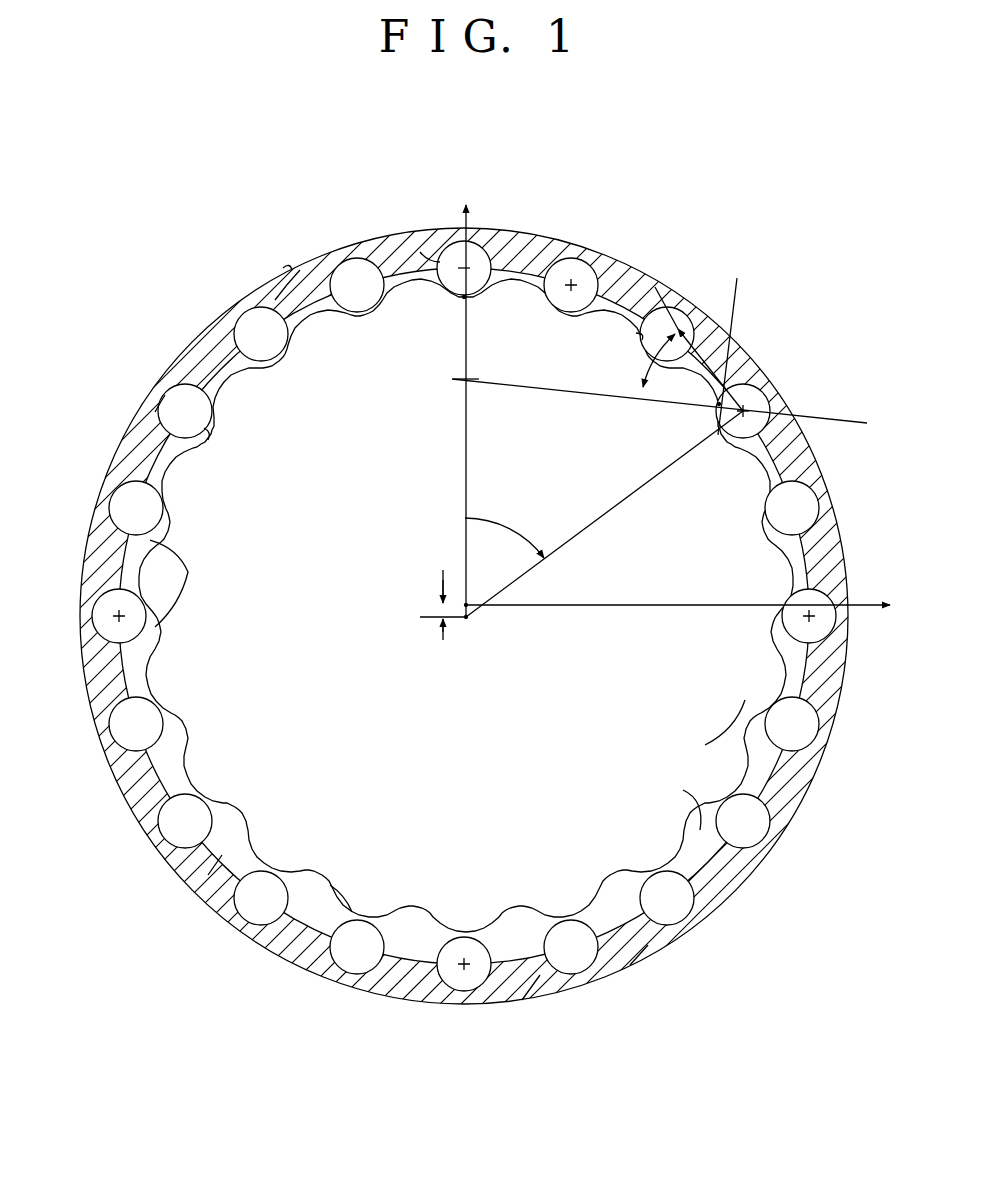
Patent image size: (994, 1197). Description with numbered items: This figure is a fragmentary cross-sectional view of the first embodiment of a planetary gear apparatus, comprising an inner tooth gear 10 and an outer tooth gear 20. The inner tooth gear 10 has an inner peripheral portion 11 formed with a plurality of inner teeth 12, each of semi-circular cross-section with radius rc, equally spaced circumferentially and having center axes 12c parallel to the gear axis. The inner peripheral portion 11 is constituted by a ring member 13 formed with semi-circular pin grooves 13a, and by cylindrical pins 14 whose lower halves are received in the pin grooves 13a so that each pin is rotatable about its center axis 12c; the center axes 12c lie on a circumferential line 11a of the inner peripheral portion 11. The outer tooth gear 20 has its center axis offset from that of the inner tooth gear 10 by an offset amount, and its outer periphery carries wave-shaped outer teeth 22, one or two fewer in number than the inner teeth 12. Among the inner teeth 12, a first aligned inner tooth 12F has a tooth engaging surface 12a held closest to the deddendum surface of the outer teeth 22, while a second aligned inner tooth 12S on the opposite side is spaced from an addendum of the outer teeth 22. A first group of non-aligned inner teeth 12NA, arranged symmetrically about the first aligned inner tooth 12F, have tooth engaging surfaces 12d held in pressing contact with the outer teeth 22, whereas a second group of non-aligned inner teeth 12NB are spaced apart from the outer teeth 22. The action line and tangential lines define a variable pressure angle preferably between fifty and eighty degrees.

The inner tooth gear 10 is at (256, 278).
The inner peripheral portion 11 is at (765, 790).
The circumferential line 11a is at (802, 547).
The inner teeth 12 is at (252, 360).
The tooth engaging surface 12a is at (422, 251).
The center axes 12c is at (464, 267).
The tooth engaging surfaces 12d is at (286, 268).
The first aligned inner tooth 12F is at (482, 303).
The second aligned inner tooth 12S is at (447, 936).
The first group of non-aligned inner teeth 12NA is at (292, 378).
The second group of non-aligned inner teeth 12NB is at (310, 832).
The ring member 13 is at (275, 300).
The pin grooves 13a is at (160, 397).
The cylindrical pins 14 is at (353, 275).
The outer tooth gear 20 is at (324, 508).
The outer teeth 22 is at (208, 875).